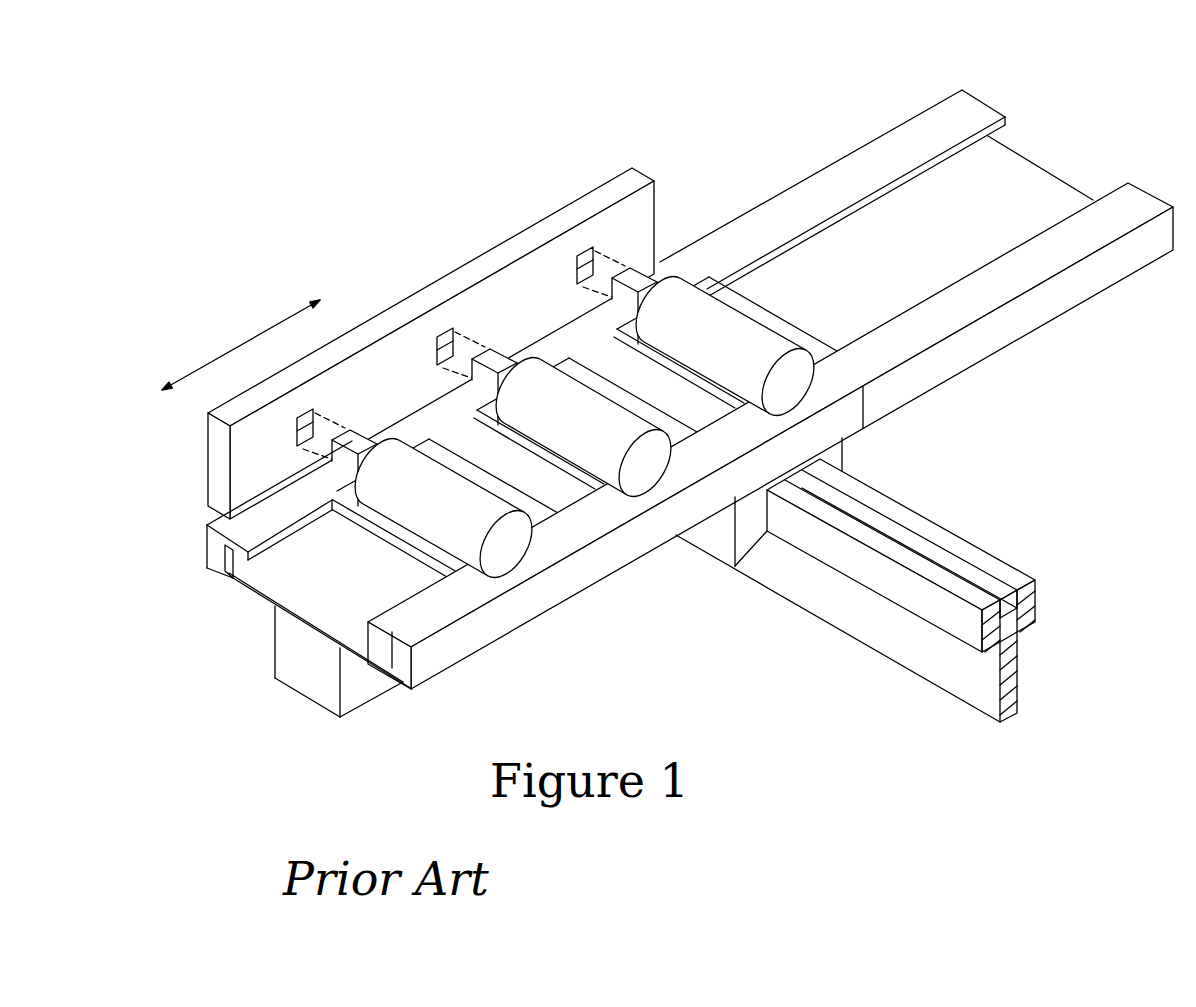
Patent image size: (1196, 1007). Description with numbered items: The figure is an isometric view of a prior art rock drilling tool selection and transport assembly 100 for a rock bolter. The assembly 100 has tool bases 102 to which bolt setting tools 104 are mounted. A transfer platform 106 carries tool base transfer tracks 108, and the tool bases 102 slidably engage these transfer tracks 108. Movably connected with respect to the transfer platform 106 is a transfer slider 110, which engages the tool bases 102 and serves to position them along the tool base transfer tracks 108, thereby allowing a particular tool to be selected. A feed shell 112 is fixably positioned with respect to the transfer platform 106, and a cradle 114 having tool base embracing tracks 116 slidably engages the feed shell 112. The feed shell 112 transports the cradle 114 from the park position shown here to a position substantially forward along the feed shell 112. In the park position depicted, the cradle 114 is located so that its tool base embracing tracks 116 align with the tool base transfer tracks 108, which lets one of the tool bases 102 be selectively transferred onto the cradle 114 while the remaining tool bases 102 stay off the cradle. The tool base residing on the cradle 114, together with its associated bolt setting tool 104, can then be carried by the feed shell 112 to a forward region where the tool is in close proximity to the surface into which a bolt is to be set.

The rock drilling tool selection and transport assembly 100 is at (667, 373).
The tool bases 102 is at (585, 500).
The bolt setting tools 104 is at (668, 327).
The transfer platform 106 is at (932, 388).
The tool base transfer tracks 108 is at (288, 579).
The transfer slider 110 is at (568, 243).
The feed shell 112 is at (927, 518).
The cradle 114 is at (845, 453).
The tool base embracing tracks 116 is at (601, 424).